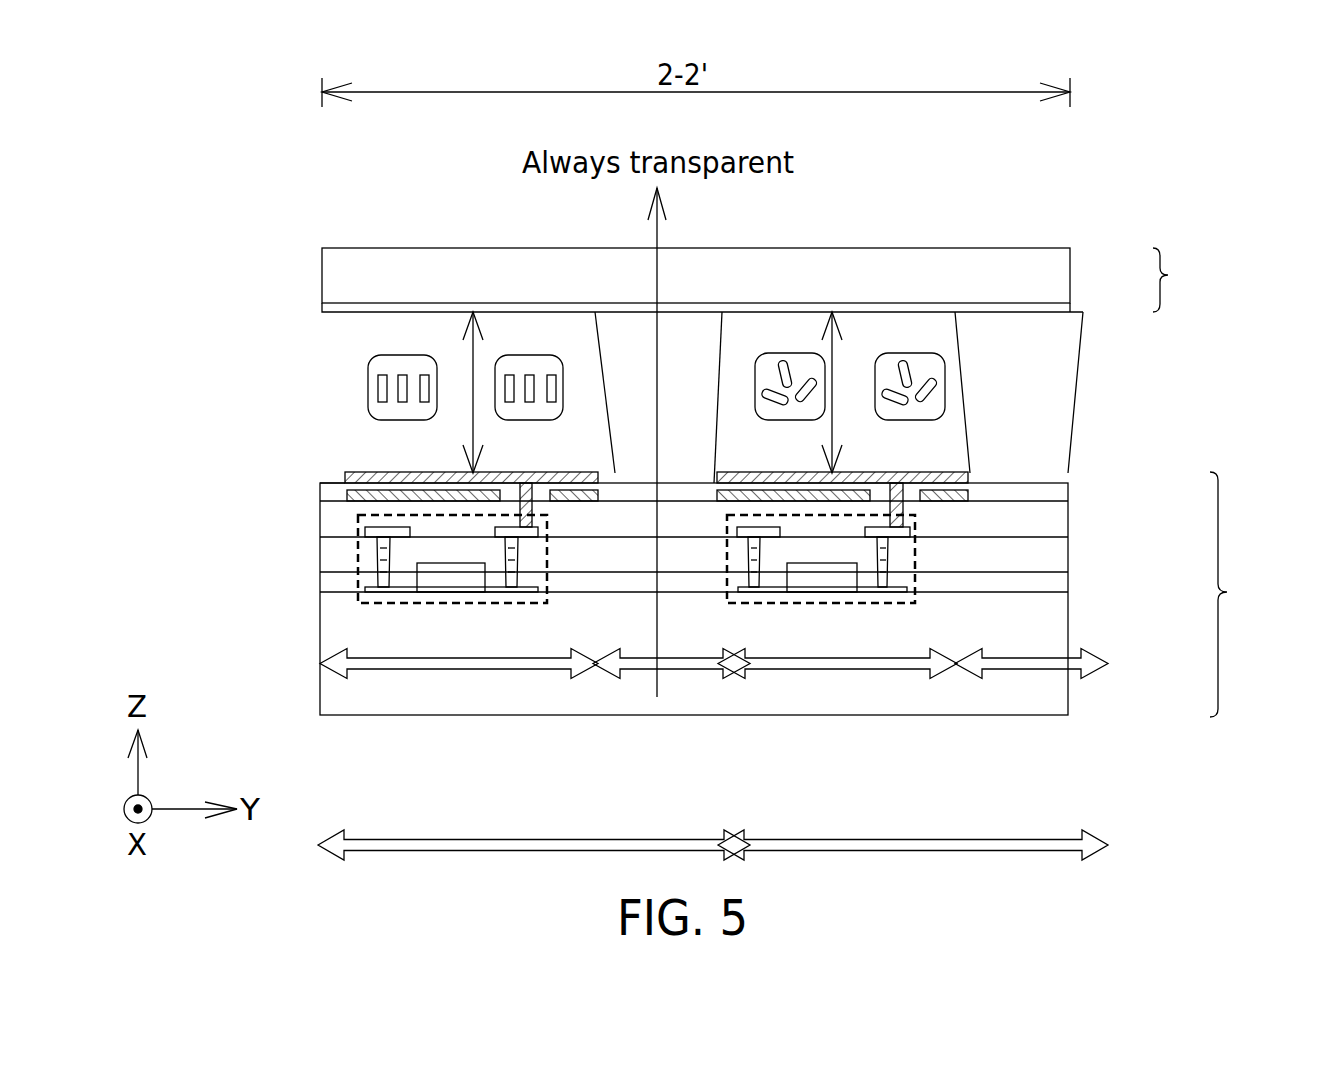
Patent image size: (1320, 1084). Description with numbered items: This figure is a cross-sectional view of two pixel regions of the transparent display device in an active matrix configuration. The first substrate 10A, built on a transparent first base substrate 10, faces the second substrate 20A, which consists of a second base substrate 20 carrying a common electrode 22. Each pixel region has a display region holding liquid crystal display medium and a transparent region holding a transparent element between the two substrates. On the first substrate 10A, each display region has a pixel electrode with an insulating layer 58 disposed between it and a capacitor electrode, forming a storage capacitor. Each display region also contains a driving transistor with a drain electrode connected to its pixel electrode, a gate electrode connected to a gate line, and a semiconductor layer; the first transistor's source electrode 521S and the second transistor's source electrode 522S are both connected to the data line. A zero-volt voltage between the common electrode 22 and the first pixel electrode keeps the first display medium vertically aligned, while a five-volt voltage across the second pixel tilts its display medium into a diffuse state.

The second base substrate 20 is at (706, 288).
The common electrode 22 is at (1053, 307).
The second substrate 20A is at (1189, 280).
The first base substrate 10 is at (875, 708).
The first substrate 10A is at (1245, 594).
The insulating layer 58 is at (325, 488).
The source electrode 521S is at (372, 534).
The source electrode 522S is at (698, 662).